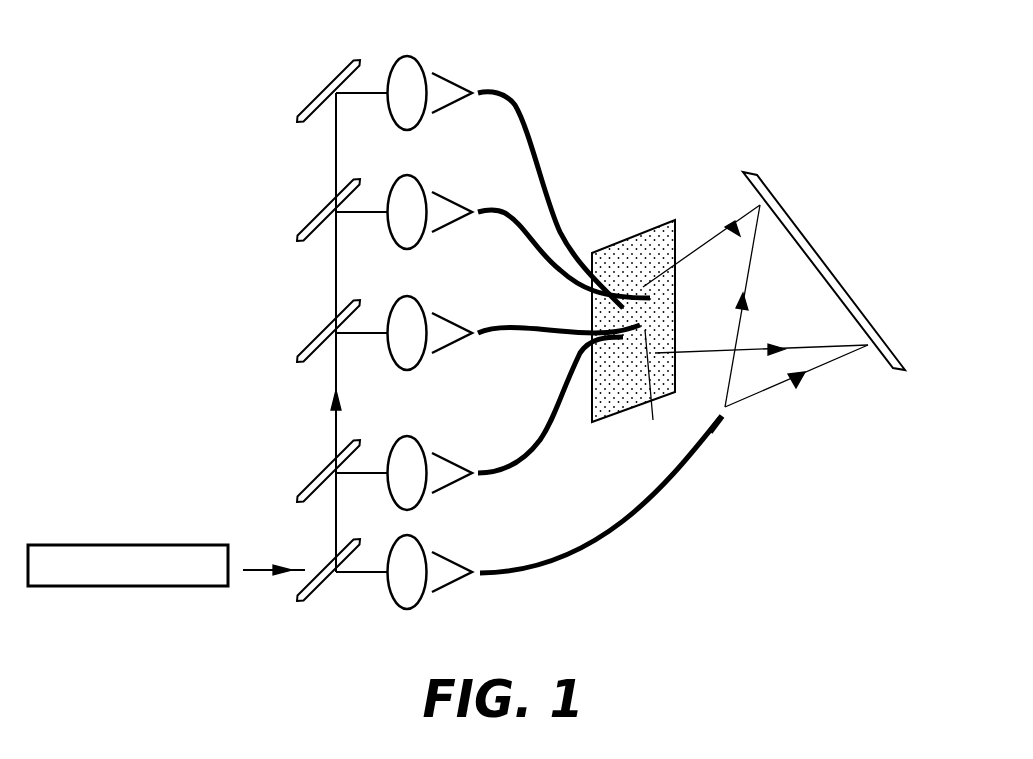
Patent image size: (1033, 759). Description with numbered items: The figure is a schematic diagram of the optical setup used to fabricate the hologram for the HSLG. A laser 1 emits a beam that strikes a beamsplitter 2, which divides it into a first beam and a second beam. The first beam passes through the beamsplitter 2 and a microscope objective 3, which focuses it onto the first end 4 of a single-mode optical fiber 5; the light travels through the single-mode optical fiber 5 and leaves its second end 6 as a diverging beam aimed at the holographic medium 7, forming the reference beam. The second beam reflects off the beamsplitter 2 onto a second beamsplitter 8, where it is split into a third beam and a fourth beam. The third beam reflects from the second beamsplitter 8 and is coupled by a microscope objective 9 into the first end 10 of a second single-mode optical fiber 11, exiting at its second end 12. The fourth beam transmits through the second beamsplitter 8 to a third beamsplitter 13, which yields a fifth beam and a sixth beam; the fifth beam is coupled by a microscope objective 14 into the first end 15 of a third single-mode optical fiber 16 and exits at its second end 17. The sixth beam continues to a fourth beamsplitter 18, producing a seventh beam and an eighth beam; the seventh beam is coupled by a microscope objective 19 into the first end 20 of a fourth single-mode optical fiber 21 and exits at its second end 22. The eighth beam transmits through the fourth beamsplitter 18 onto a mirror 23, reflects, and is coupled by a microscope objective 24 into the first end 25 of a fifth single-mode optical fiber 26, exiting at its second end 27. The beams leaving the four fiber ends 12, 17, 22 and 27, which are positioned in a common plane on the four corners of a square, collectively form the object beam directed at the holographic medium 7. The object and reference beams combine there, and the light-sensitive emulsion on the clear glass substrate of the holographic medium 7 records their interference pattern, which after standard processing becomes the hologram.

The laser 1 is at (160, 542).
The beamsplitter 2 is at (338, 580).
The microscope objective 3 is at (398, 612).
The first end 4 is at (481, 583).
The single-mode optical fiber 5 is at (676, 490).
The second end 6 is at (724, 432).
The holographic medium 7 is at (825, 250).
The second beamsplitter 8 is at (312, 465).
The microscope objective 9 is at (427, 450).
The first end 10 is at (478, 468).
The second single-mode optical fiber 11 is at (522, 468).
The second end 12 is at (620, 375).
The third beamsplitter 13 is at (318, 323).
The microscope objective 14 is at (430, 305).
The first end 15 is at (500, 320).
The third single-mode optical fiber 16 is at (505, 343).
The second end 17 is at (657, 390).
The fourth beamsplitter 18 is at (318, 203).
The microscope objective 19 is at (418, 176).
The first end 20 is at (482, 205).
The fourth single-mode optical fiber 21 is at (515, 217).
The second end 22 is at (624, 300).
The mirror 23 is at (320, 85).
The microscope objective 24 is at (418, 55).
The first end 25 is at (495, 90).
The fifth single-mode optical fiber 26 is at (567, 218).
The second end 27 is at (672, 262).